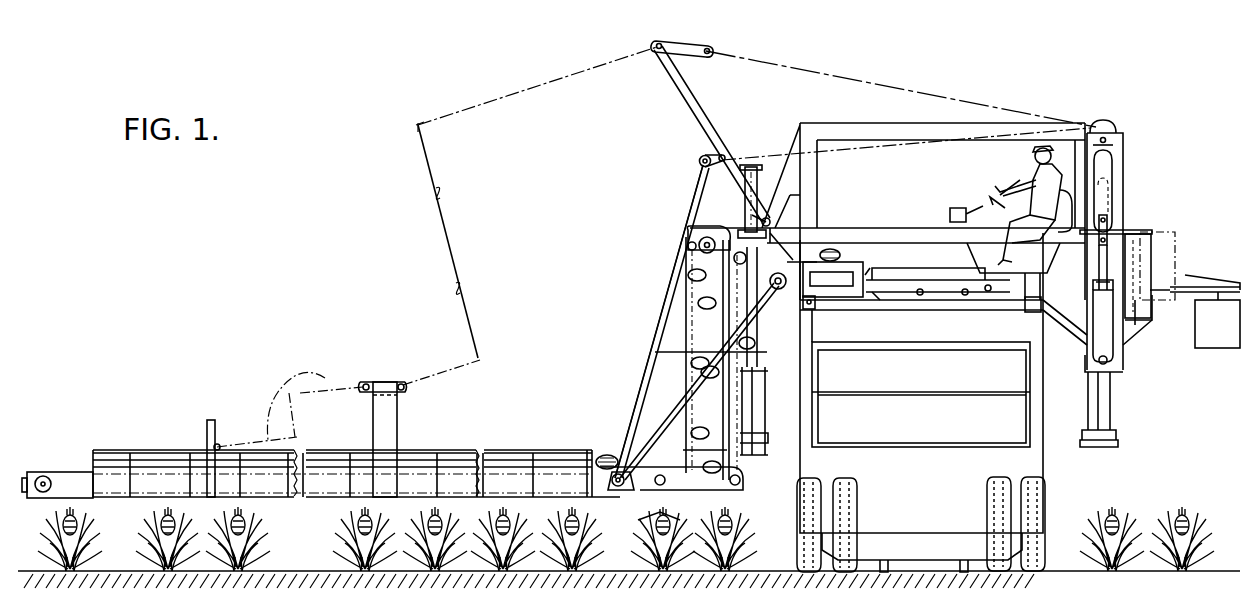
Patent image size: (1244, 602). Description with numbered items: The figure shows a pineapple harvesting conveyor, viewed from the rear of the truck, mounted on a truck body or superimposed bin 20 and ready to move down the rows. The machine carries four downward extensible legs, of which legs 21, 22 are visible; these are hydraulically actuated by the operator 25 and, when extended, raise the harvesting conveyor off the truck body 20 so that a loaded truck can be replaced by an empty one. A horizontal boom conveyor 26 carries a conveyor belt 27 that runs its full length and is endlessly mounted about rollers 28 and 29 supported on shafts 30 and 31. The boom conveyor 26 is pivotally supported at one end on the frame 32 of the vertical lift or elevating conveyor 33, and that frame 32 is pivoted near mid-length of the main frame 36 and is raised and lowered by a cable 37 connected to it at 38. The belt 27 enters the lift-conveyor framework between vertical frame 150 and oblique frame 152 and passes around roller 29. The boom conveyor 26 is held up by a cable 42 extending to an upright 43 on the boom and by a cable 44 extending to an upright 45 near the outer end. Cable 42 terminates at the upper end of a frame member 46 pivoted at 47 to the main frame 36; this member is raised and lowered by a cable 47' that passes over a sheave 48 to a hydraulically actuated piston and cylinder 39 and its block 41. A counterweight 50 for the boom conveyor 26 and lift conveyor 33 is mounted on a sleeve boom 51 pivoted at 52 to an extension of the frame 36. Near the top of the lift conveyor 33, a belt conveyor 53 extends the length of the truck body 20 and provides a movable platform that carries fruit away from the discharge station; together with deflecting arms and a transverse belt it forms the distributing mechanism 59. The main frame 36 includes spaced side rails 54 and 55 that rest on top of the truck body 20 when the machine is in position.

The truck body or bin 20 is at (921, 402).
The downward extensible leg 21 is at (758, 426).
The downward extensible leg 22 is at (1111, 415).
The operator 25 is at (1011, 205).
The horizontal boom conveyor 26 is at (67, 466).
The conveyor belt 27 is at (152, 470).
The roller 28 is at (43, 476).
The roller 29 is at (648, 520).
The shaft 30 is at (348, 515).
The shaft 31 is at (630, 488).
The frame of vertical lift conveyor 32 is at (655, 345).
The vertical lift or elevating conveyor 33 is at (645, 306).
The main frame 36 is at (786, 225).
The cable 37 is at (748, 153).
The cable connection point 38 is at (701, 156).
The hydraulically actuated piston and cylinder 39 is at (1105, 325).
The block 41 is at (1112, 212).
The cable 42 is at (478, 105).
The upright 43 is at (390, 418).
The cable 44 is at (315, 401).
The upright 45 is at (216, 440).
The frame member 46 is at (675, 89).
The pivot 47 is at (906, 175).
The cable 47' is at (901, 89).
The sheave 48 is at (1112, 127).
The counterweight 50 is at (1217, 320).
The sleeve boom 51 is at (1193, 283).
The pivot 52 is at (1153, 262).
The belt conveyor 53 is at (846, 277).
The side rail 54 is at (808, 310).
The side rail 55 is at (1030, 312).
The distributing mechanism 59 is at (943, 275).
The vertical frame 150 is at (647, 428).
The oblique frame 152 is at (665, 415).